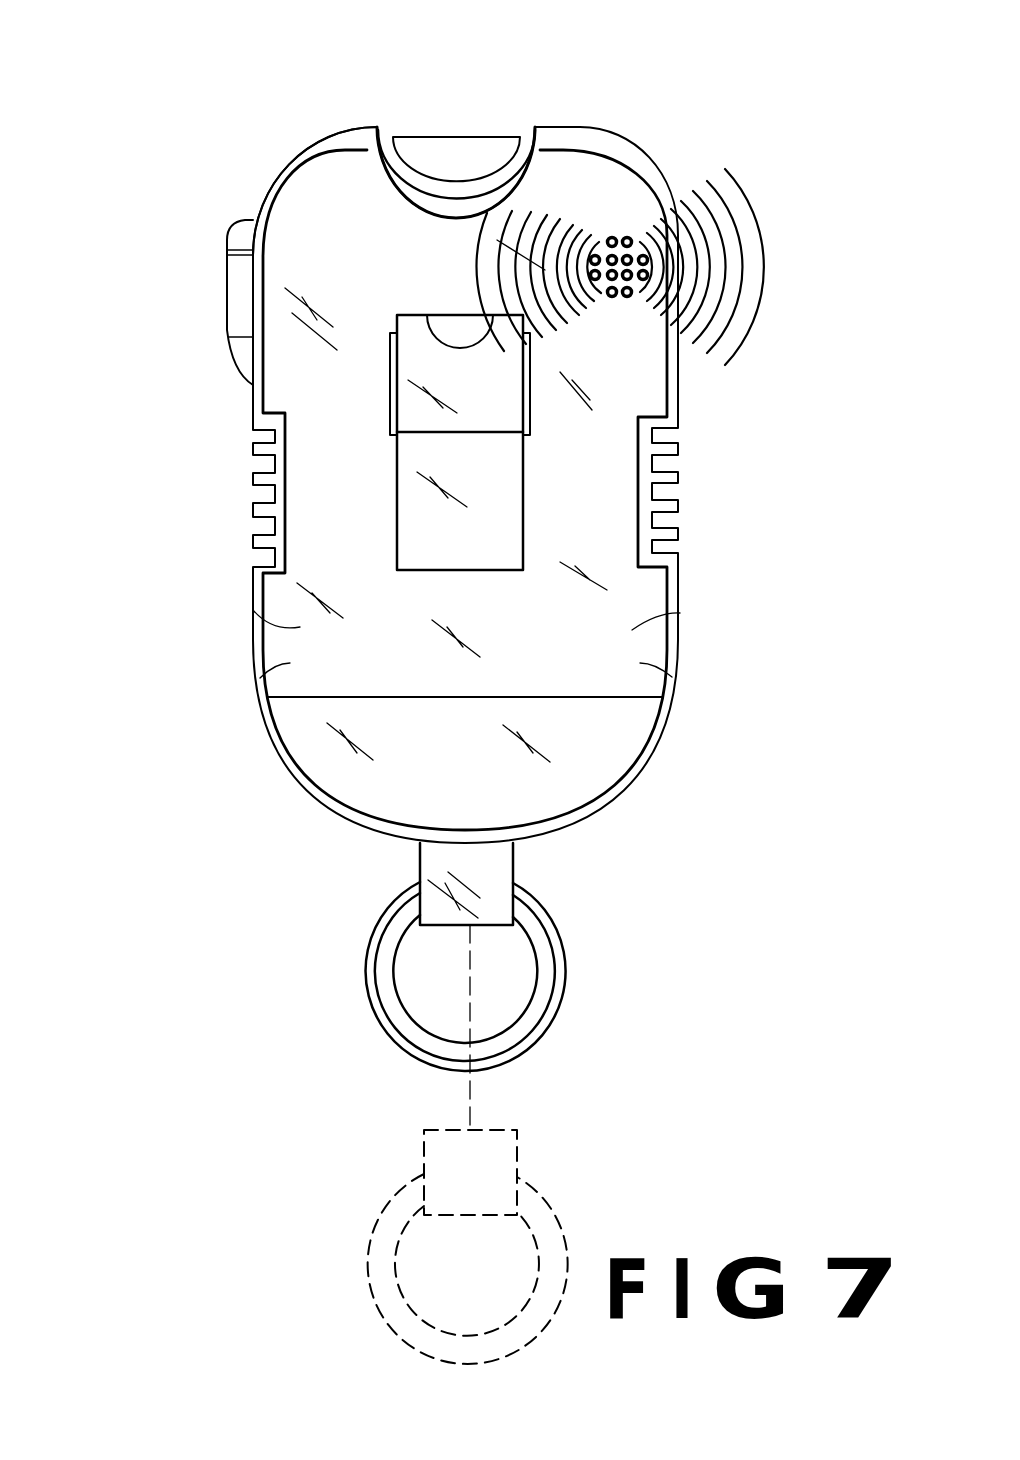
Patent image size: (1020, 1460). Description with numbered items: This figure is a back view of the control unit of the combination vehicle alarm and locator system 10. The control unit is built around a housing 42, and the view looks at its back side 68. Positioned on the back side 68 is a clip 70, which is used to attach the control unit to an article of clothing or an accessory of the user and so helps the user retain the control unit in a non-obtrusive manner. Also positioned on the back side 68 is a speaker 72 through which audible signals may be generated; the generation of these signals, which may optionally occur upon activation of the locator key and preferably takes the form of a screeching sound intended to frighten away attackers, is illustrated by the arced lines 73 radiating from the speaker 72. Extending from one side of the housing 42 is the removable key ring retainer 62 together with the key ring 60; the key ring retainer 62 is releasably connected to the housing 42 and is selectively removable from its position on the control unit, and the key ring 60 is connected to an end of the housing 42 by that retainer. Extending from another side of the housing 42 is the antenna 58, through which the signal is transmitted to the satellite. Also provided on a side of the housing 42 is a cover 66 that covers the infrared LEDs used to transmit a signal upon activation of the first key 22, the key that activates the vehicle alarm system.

The combination vehicle alarm and locator system 10 is at (130, 250).
The first key 22 is at (682, 617).
The housing 42 is at (682, 357).
The antenna 58 is at (246, 226).
The key ring 60 is at (423, 1030).
The key ring retainer 62 is at (435, 866).
The cover 66 is at (456, 153).
The back side 68 is at (343, 187).
The clip 70 is at (493, 511).
The speaker 72 is at (622, 228).
The arced lines 73 is at (745, 195).